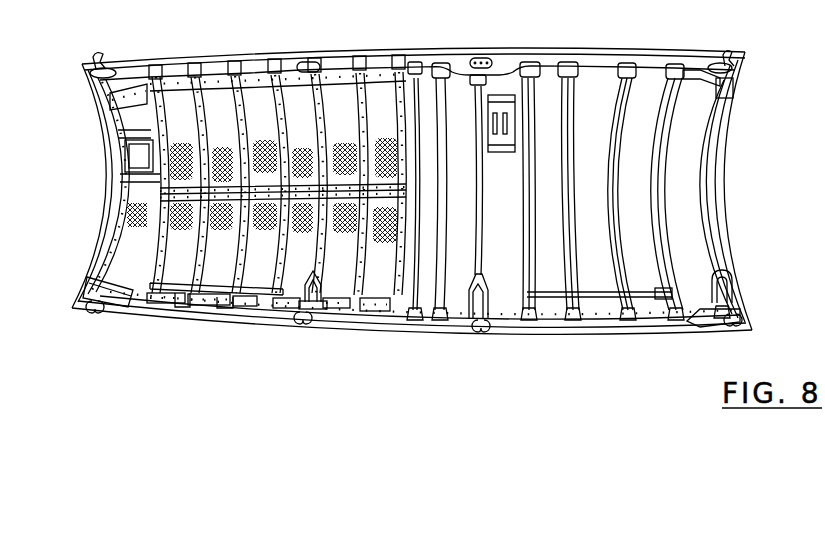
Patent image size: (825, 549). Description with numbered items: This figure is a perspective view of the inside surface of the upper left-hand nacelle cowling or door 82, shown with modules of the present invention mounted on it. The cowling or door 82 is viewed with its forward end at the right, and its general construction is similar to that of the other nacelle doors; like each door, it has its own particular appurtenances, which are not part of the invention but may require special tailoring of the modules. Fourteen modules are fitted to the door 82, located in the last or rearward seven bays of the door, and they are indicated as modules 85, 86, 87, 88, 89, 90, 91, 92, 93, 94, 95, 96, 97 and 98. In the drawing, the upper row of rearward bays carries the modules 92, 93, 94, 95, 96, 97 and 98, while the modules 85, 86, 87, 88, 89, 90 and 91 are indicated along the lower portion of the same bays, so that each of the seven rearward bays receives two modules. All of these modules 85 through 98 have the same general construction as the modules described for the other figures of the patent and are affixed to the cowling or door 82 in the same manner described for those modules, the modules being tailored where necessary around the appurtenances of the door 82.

The upper left-hand cowling or door 82 is at (723, 172).
The module 85 is at (383, 290).
The module 86 is at (338, 272).
The module 87 is at (290, 266).
The module 88 is at (258, 270).
The module 89 is at (218, 262).
The module 90 is at (178, 253).
The module 91 is at (123, 270).
The module 92 is at (137, 107).
The module 93 is at (174, 108).
The module 94 is at (213, 107).
The module 95 is at (258, 103).
The module 96 is at (295, 105).
The module 97 is at (338, 100).
The module 98 is at (380, 100).